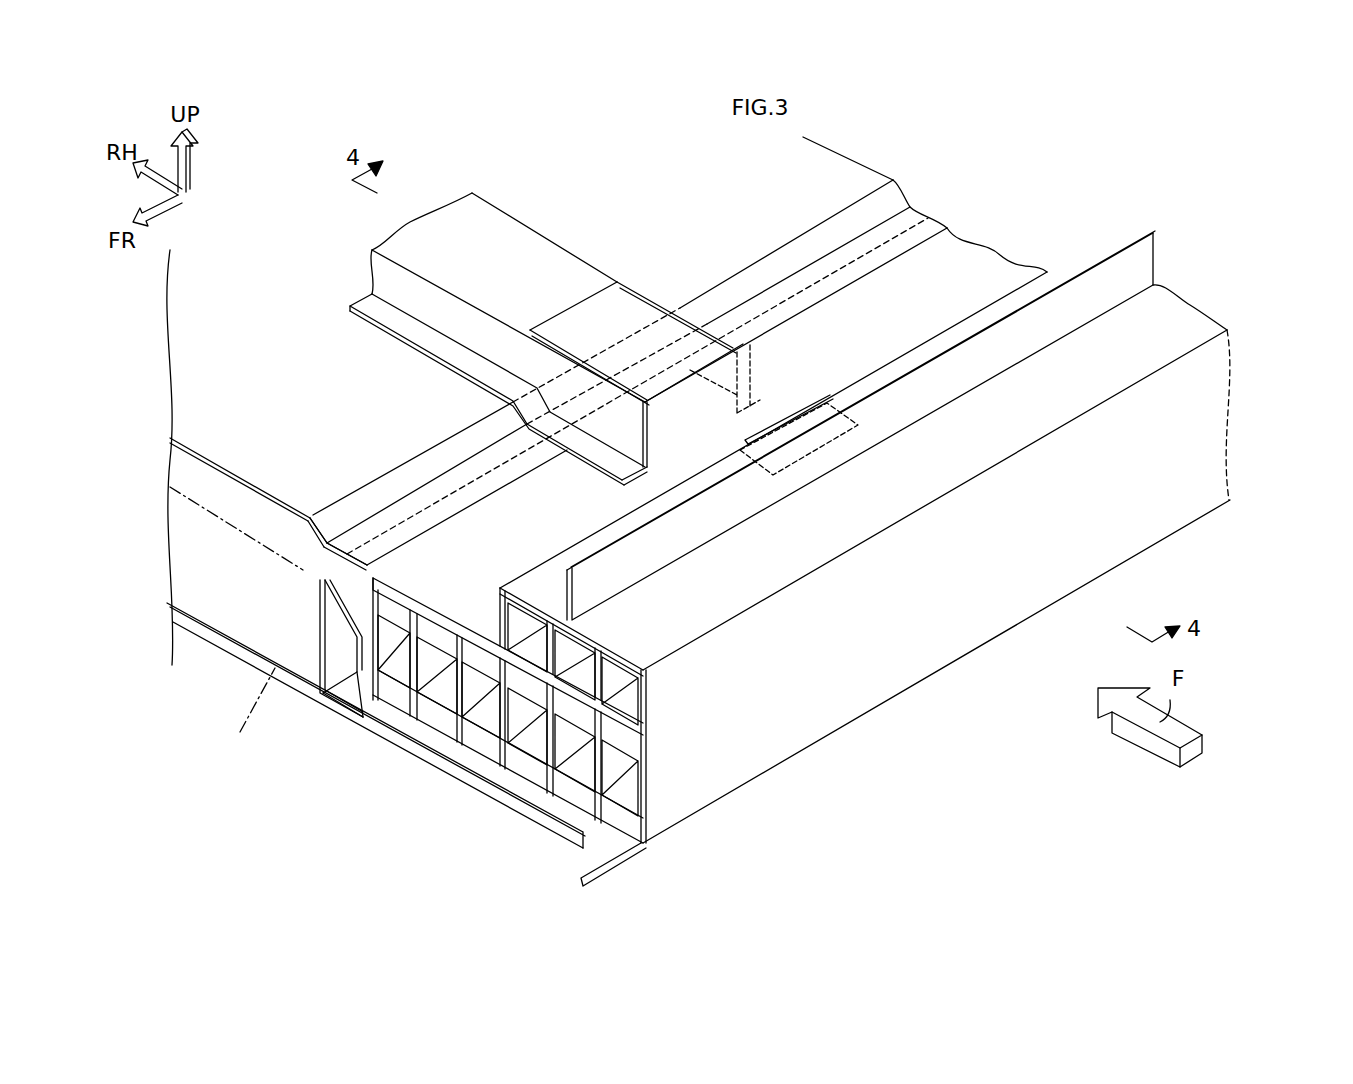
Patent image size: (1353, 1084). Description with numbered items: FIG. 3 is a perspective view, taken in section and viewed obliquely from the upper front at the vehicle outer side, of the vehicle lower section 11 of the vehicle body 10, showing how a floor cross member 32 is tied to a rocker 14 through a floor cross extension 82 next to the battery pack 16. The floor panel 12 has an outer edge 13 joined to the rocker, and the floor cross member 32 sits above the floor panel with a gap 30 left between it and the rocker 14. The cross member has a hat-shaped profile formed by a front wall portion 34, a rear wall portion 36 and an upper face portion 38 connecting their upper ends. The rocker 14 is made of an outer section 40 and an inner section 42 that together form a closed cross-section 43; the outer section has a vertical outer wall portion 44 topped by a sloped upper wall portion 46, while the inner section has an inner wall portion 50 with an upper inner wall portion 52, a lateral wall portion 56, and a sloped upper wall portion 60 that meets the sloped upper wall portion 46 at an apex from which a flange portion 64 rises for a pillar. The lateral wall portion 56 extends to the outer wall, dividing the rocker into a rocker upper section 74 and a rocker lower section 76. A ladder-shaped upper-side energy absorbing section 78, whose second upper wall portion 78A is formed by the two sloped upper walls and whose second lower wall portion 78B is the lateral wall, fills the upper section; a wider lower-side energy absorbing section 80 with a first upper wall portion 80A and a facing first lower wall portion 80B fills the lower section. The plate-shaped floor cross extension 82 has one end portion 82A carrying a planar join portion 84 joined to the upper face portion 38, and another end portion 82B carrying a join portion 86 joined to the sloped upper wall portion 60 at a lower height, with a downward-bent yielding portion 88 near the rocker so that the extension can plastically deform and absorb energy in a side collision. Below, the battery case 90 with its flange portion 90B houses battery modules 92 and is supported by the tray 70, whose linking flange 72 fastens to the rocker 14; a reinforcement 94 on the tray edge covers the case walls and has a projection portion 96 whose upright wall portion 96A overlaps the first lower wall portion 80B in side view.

The vehicle body 10 is at (925, 204).
The vehicle lower section 11 is at (1026, 196).
The floor panel 12 is at (853, 172).
The outer edge 13 is at (500, 476).
The rocker 14 is at (940, 691).
The battery pack 16 is at (201, 646).
The gap 30 is at (540, 317).
The floor cross member 32 is at (499, 200).
The front wall portion 34 is at (430, 305).
The rear wall portion 36 is at (767, 357).
The upper face portion 38 is at (520, 240).
The outer section 40 is at (898, 518).
The inner section 42 is at (552, 549).
The closed cross-section 43 is at (492, 657).
The outer wall portion 44 is at (1228, 440).
The sloped upper wall portion 46 is at (1197, 321).
The inner wall portion 50 is at (439, 676).
The upper inner wall portion 52 is at (495, 610).
The lateral wall portion 56 is at (462, 520).
The sloped upper wall portion 60 is at (892, 406).
The flange portion 64 is at (1156, 262).
The tray 70 is at (230, 658).
The linking flange 72 is at (403, 747).
The rocker upper section 74 is at (654, 692).
The rocker lower section 76 is at (654, 785).
The upper-side energy absorbing section 78 is at (549, 734).
The second upper wall portion 78A is at (583, 630).
The second lower wall portion 78B is at (563, 773).
The lower-side energy absorbing section 80 is at (557, 780).
The first upper wall portion 80A is at (518, 678).
The first lower wall portion 80B is at (560, 690).
The floor cross extension 82 is at (731, 347).
The one end portion 82A is at (585, 317).
The other end portion 82B is at (797, 432).
The join portion 84 is at (610, 305).
The join portion 86 is at (820, 410).
The yielding portion 88 is at (805, 397).
The battery case 90 is at (298, 623).
The flange portion 90B is at (346, 613).
The battery module 92 is at (228, 738).
The reinforcement 94 is at (330, 700).
The projection portion 96 is at (335, 577).
The upright wall portion 96A is at (370, 700).